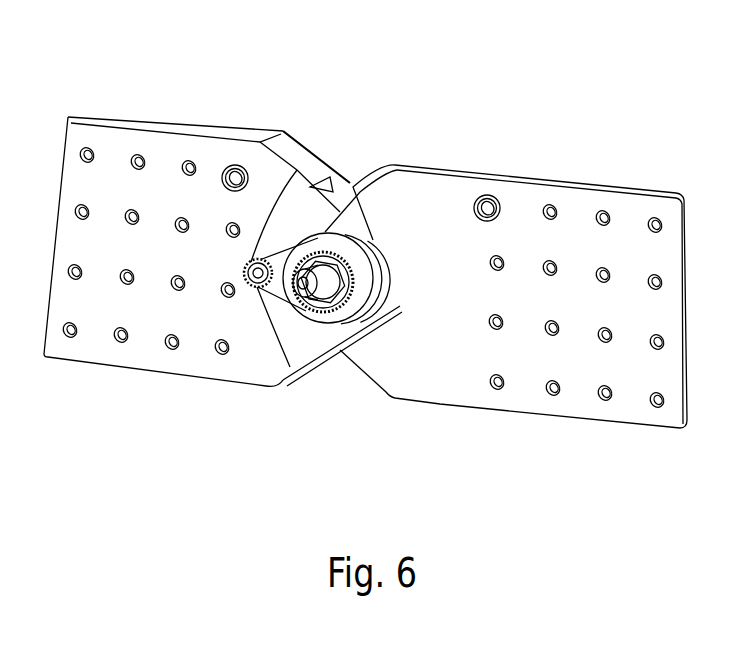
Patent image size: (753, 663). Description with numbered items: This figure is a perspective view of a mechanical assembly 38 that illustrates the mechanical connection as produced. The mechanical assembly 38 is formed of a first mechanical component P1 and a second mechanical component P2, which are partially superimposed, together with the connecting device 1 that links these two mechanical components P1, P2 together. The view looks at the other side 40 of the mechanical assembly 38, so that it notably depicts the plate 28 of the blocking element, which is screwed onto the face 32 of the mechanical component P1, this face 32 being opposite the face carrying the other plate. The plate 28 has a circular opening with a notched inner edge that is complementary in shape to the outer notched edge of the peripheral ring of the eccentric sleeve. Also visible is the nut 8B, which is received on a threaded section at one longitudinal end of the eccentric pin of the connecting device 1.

The mechanical component P1 is at (227, 133).
The mechanical component P2 is at (487, 410).
The connecting device 1 is at (352, 182).
The mechanical assembly 38 is at (398, 100).
The face 32 is at (338, 231).
The plate 28 is at (350, 235).
The nut 8B is at (300, 300).
The other side 40 is at (335, 333).